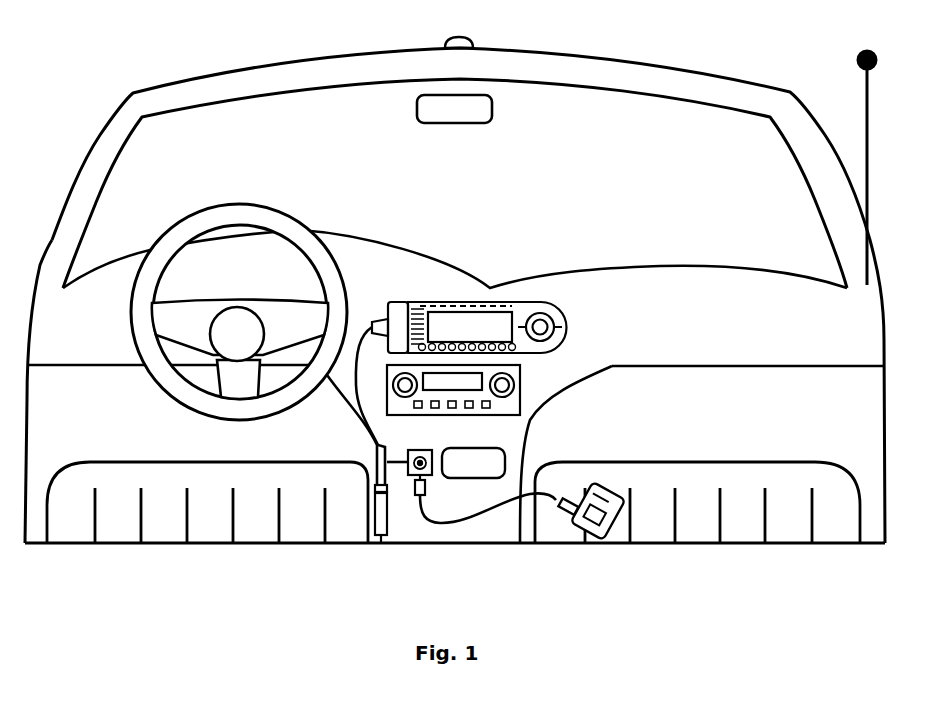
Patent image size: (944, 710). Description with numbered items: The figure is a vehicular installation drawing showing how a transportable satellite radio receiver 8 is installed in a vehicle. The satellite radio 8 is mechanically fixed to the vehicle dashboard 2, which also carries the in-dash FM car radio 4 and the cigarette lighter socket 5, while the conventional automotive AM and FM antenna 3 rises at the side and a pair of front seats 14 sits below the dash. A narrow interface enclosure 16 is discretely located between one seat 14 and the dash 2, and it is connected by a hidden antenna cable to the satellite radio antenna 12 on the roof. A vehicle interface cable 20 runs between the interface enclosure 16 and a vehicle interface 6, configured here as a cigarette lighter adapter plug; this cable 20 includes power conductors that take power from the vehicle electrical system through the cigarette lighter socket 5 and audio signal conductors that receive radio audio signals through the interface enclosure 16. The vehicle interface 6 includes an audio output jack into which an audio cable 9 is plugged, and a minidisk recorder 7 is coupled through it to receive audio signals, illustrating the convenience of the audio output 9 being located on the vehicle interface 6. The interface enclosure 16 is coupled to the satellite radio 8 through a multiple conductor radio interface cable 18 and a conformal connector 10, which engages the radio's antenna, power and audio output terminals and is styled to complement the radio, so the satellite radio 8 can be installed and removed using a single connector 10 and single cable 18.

The vehicle dashboard 2 is at (817, 207).
The automotive AM and FM antenna 3 is at (868, 192).
The in-dash FM car radio 4 is at (521, 380).
The cigarette lighter socket 5 is at (420, 463).
The vehicle interface 6 is at (433, 474).
The minidisk recorder 7 is at (616, 490).
The transportable satellite radio receiver 8 is at (566, 331).
The audio cable 9 is at (416, 490).
The conformal connector 10 is at (396, 302).
The satellite radio antenna 12 is at (467, 40).
The front seats 14 is at (107, 460).
The interface enclosure 16 is at (381, 543).
The radio interface cable 18 is at (358, 400).
The vehicle interface cable 20 is at (406, 450).